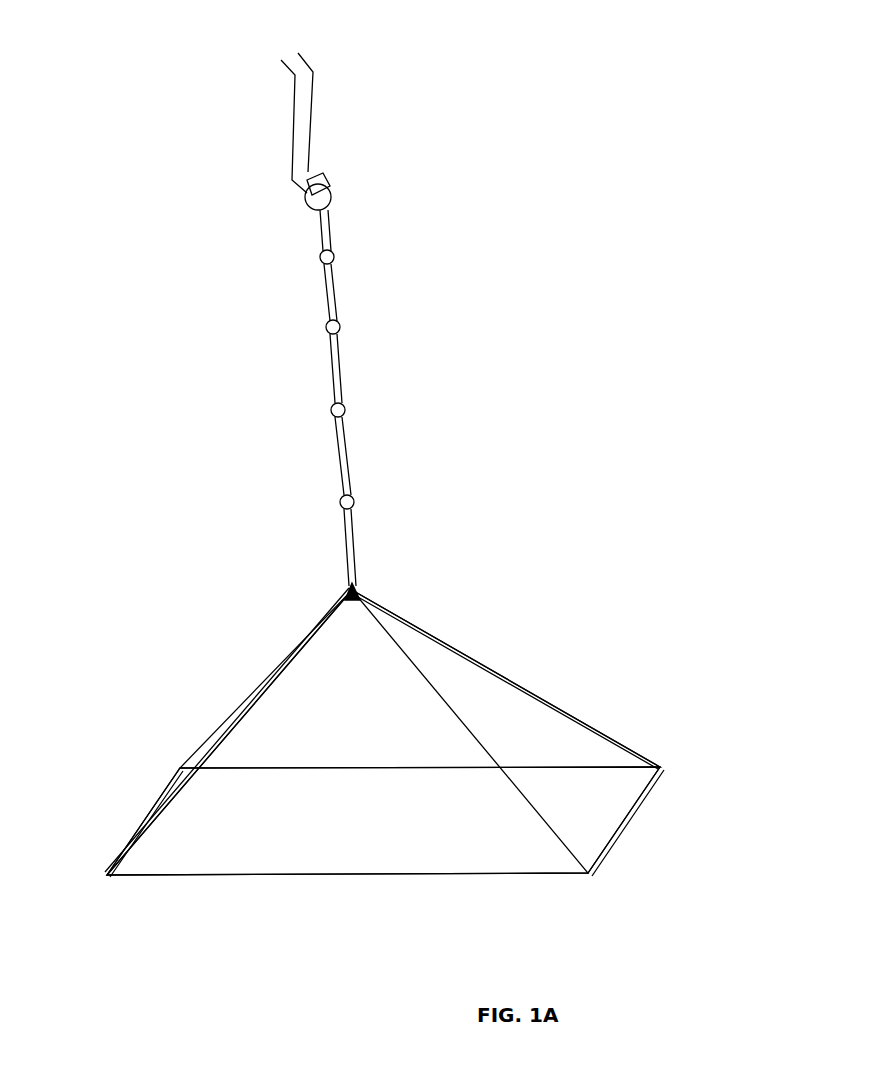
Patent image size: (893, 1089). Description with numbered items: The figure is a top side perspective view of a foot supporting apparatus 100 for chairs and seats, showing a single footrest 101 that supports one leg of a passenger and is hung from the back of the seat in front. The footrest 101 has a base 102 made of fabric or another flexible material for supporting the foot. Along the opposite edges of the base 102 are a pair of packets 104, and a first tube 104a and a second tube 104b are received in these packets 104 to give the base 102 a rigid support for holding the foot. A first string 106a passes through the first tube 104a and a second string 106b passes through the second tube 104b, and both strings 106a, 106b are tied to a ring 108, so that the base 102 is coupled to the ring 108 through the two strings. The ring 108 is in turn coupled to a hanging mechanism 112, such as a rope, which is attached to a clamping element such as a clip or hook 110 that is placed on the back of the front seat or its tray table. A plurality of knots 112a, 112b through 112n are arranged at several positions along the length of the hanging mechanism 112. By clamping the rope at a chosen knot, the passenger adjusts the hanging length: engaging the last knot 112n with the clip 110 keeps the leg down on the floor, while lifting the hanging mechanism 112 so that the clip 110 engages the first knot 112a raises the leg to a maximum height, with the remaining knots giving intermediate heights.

The lifting system 100 is at (466, 120).
The footrest 101 is at (465, 616).
The base 102 is at (600, 832).
The packets 104 is at (608, 838).
The first tube 104a is at (650, 765).
The second tube 104b is at (157, 797).
The first string 106a is at (505, 682).
The second string 106b is at (257, 690).
The ring 108 is at (356, 584).
The clip 110 is at (314, 104).
The hanging mechanism 112 is at (345, 362).
The first knot 112a is at (352, 495).
The knot 112b is at (342, 405).
The last knot 112n is at (335, 250).